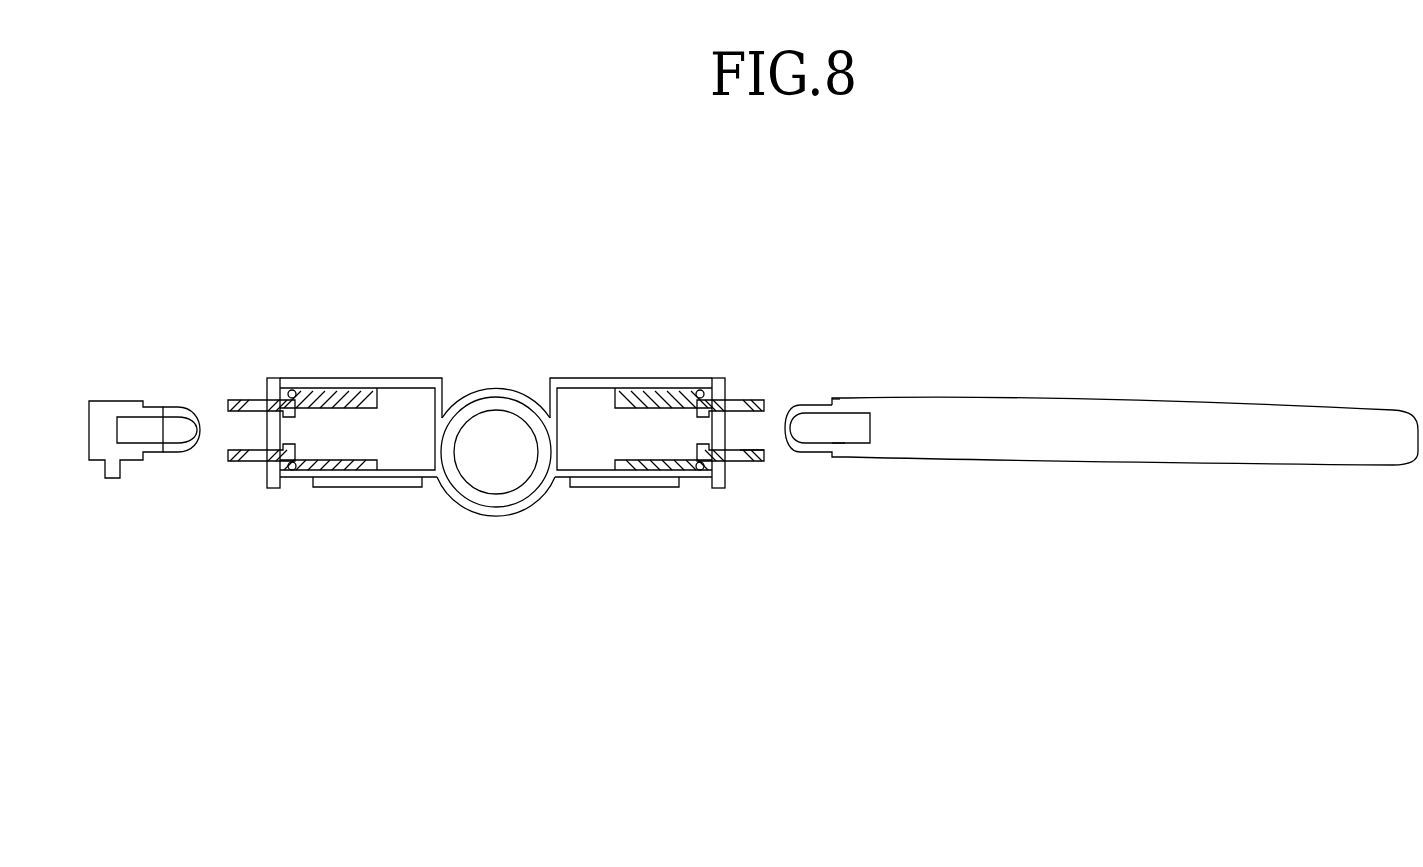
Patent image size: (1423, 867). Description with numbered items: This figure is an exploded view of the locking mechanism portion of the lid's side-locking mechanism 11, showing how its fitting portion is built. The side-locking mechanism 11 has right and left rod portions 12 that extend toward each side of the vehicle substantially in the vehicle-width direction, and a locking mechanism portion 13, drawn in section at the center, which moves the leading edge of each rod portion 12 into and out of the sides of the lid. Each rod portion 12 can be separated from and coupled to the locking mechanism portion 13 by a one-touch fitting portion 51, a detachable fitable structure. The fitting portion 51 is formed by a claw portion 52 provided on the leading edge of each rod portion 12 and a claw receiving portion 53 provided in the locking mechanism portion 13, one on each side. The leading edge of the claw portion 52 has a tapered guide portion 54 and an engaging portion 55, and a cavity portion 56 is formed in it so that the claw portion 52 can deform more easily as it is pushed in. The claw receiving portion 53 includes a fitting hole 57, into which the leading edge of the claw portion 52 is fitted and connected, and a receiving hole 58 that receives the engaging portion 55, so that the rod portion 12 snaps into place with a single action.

The side-locking mechanism 11 is at (450, 308).
The rod portion 12 is at (112, 397).
The locking mechanism portion 13 is at (500, 370).
The fitting portion 51 is at (513, 374).
The claw portion 52 is at (150, 378).
The claw receiving portion 53 is at (513, 433).
The tapered guide portion 54 is at (788, 400).
The engaging portion 55 is at (830, 400).
The cavity portion 56 is at (838, 443).
The fitting hole 57 is at (760, 450).
The receiving hole 58 is at (733, 462).